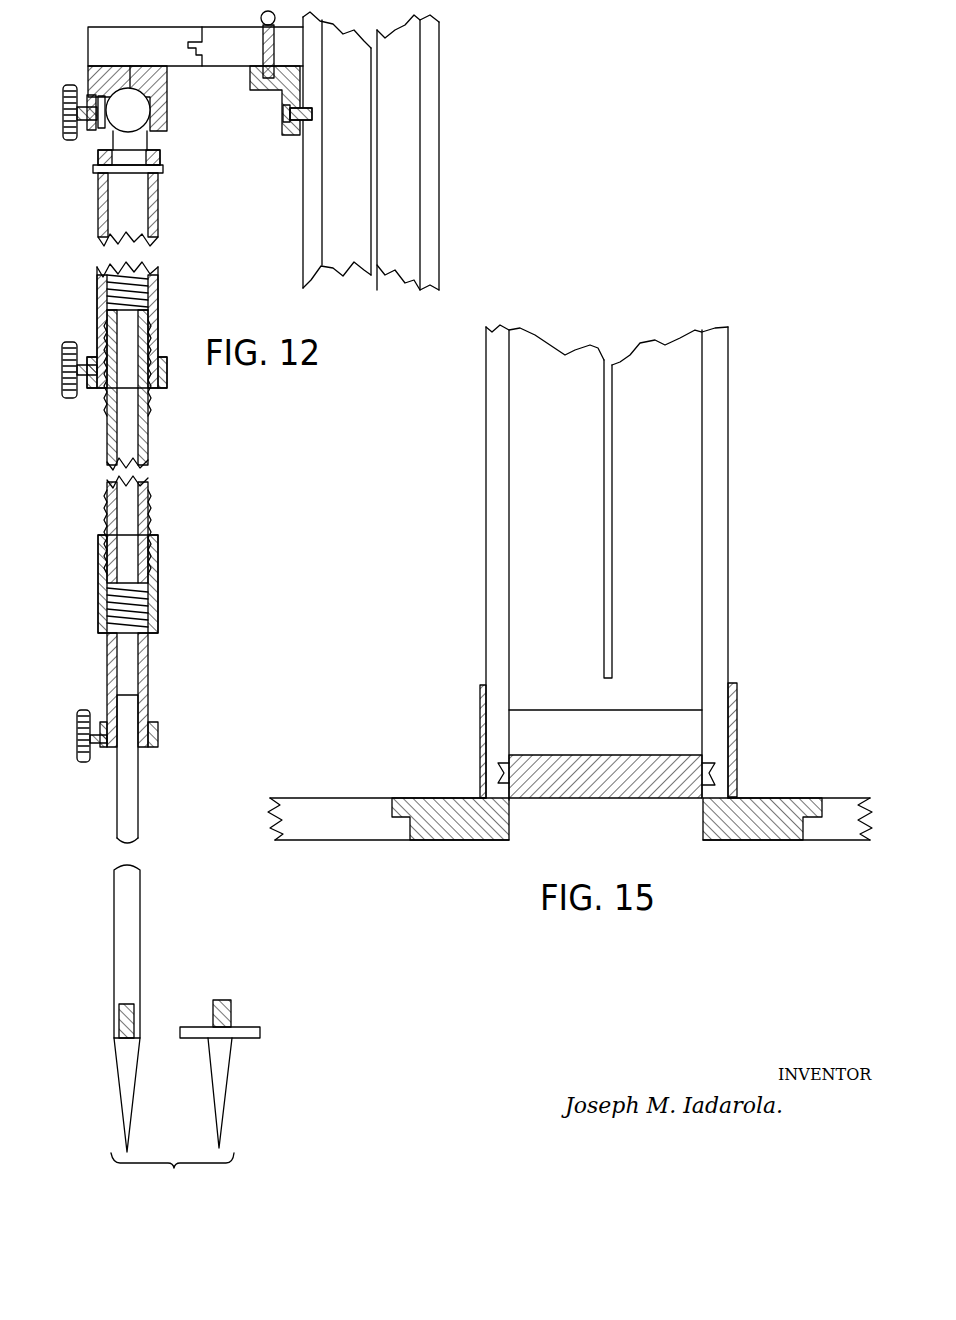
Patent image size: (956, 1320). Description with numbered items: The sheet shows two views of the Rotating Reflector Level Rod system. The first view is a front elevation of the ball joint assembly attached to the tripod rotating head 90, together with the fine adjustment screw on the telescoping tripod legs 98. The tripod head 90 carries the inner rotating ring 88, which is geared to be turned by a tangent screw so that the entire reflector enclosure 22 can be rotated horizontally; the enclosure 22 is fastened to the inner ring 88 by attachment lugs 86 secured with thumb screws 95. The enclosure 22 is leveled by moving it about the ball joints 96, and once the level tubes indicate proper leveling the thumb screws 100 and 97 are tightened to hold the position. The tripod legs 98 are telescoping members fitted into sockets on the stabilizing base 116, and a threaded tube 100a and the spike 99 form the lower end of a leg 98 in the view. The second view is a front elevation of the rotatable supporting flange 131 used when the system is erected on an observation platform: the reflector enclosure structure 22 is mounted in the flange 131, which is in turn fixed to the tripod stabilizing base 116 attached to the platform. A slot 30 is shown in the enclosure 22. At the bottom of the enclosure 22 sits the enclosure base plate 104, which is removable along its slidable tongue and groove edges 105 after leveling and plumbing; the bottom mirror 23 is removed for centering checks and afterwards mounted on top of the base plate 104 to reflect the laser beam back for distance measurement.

In FIG. 12, the reflector enclosure 22 is at (305, 173).
In FIG. 15, the reflector enclosure 22 is at (657, 500).
In FIG. 15, the bottom mirror 23 is at (610, 733).
In FIG. 15, the slot 30 is at (610, 372).
In FIG. 12, the attachment lugs 86 is at (280, 95).
In FIG. 12, the inner rotating ring 88 is at (245, 50).
In FIG. 12, the tripod head 90 is at (170, 43).
In FIG. 12, the thumb screws 95 is at (262, 16).
In FIG. 12, the ball joints 96 is at (122, 110).
In FIG. 12, the thumb screws 97 is at (70, 108).
In FIG. 12, the tripod legs 98 is at (105, 205).
In FIG. 12, the spike 99 is at (220, 1055).
In FIG. 12, the thumb screws 100 is at (82, 730).
In FIG. 12, the threaded tube 100a is at (143, 500).
In FIG. 15, the enclosure base plate 104 is at (705, 758).
In FIG. 15, the tongue and groove edges 105 is at (713, 768).
In FIG. 15, the tripod stabilizing base 116 is at (313, 817).
In FIG. 15, the rotatable supporting flange 131 is at (430, 813).